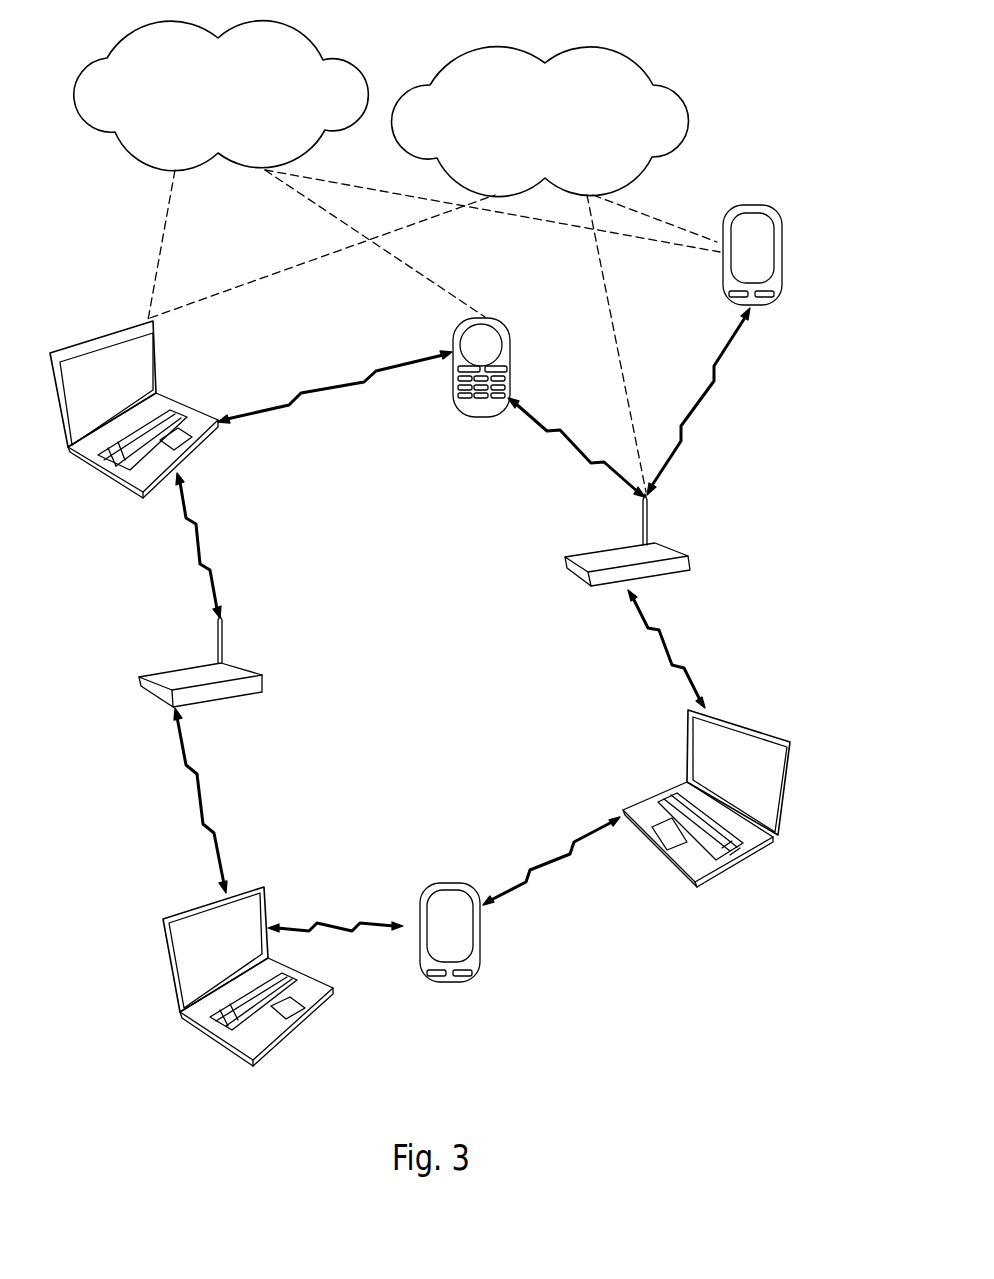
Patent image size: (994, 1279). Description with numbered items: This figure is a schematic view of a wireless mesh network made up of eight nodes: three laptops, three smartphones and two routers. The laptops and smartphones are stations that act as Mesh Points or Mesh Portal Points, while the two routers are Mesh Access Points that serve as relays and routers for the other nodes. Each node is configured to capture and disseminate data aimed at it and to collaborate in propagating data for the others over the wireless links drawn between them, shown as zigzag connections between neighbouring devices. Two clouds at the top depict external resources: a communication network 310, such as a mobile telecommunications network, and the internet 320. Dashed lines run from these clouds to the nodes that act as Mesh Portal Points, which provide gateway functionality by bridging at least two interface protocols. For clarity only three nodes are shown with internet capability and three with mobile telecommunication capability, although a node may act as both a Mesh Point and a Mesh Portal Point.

The communication network 310 is at (237, 81).
The internet 320 is at (563, 94).